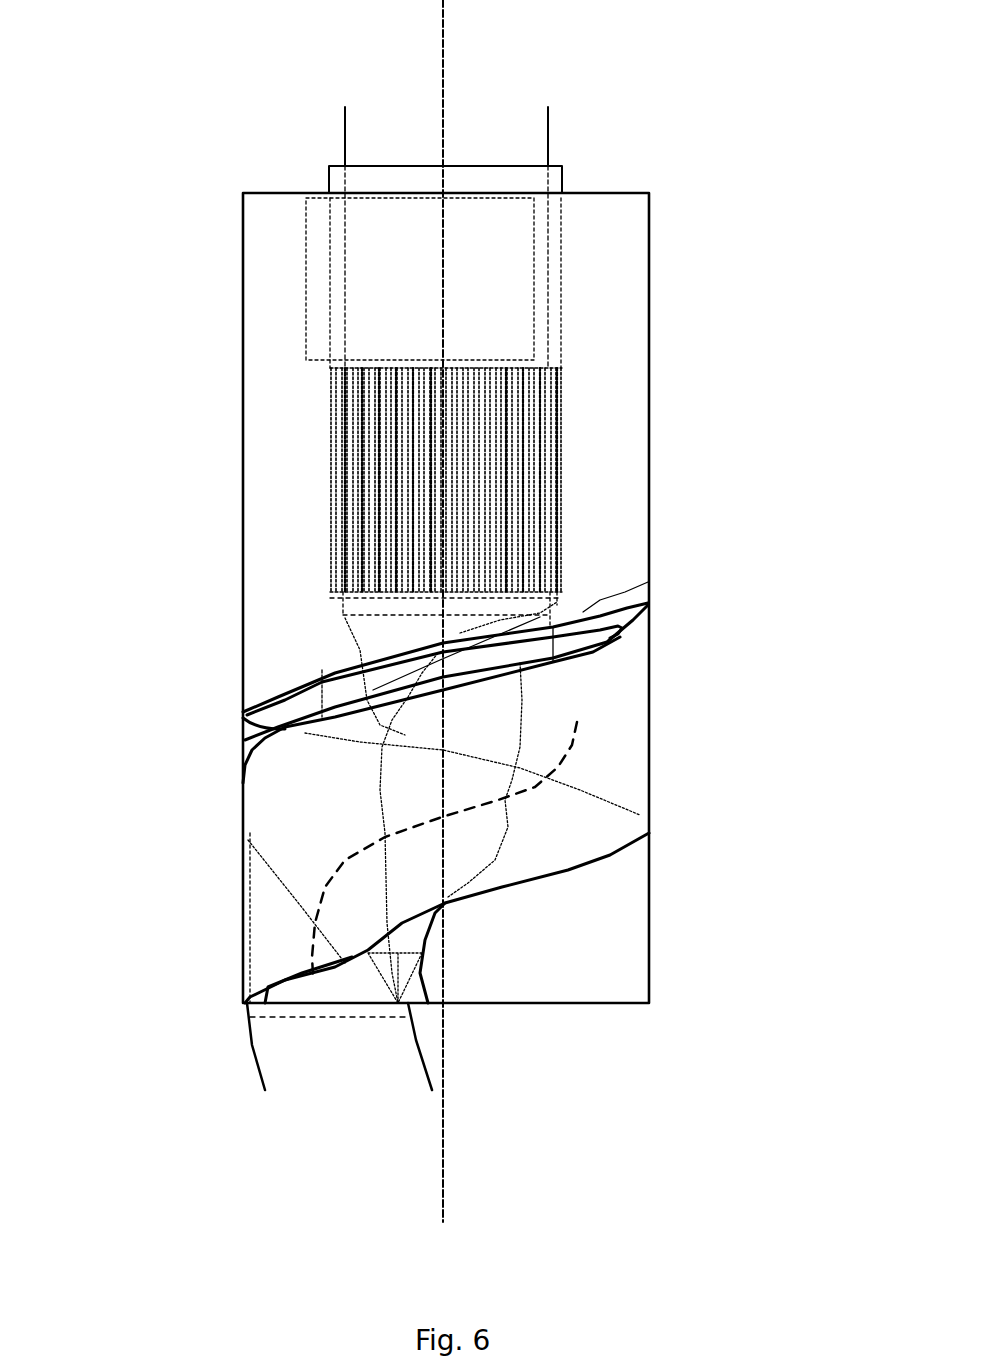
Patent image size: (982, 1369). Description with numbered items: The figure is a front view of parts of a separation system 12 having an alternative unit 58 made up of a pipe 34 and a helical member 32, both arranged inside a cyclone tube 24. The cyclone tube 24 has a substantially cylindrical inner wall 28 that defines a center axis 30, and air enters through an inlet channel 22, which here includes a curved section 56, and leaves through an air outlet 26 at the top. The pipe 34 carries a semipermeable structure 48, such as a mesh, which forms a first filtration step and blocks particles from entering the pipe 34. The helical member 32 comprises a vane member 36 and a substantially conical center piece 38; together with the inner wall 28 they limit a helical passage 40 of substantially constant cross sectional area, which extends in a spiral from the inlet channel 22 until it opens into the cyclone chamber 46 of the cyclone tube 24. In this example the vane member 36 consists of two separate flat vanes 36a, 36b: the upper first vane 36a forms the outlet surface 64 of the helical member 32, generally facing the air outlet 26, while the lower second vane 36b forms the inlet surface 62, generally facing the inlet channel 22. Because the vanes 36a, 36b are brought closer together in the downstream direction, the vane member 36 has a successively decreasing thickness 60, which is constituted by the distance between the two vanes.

The separation system 12 is at (200, 70).
The inlet channel 22 is at (305, 1055).
The cyclone tube 24 is at (649, 290).
The air outlet 26 is at (478, 185).
The inner wall 28 is at (242, 388).
The center axis 30 is at (455, 47).
The helical member 32 is at (287, 797).
The pipe 34 is at (350, 300).
The vane member 36 is at (398, 688).
The first vane 36a is at (300, 686).
The second vane 36b is at (250, 748).
The center piece 38 is at (367, 628).
The helical passage 40 is at (572, 748).
The cyclone chamber 46 is at (627, 385).
The semipermeable structure 48 is at (360, 497).
The curved section 56 is at (435, 1062).
The unit 58 is at (147, 238).
The thickness 60 is at (320, 677).
The inlet surface 62 is at (567, 665).
The outlet surface 64 is at (583, 610).